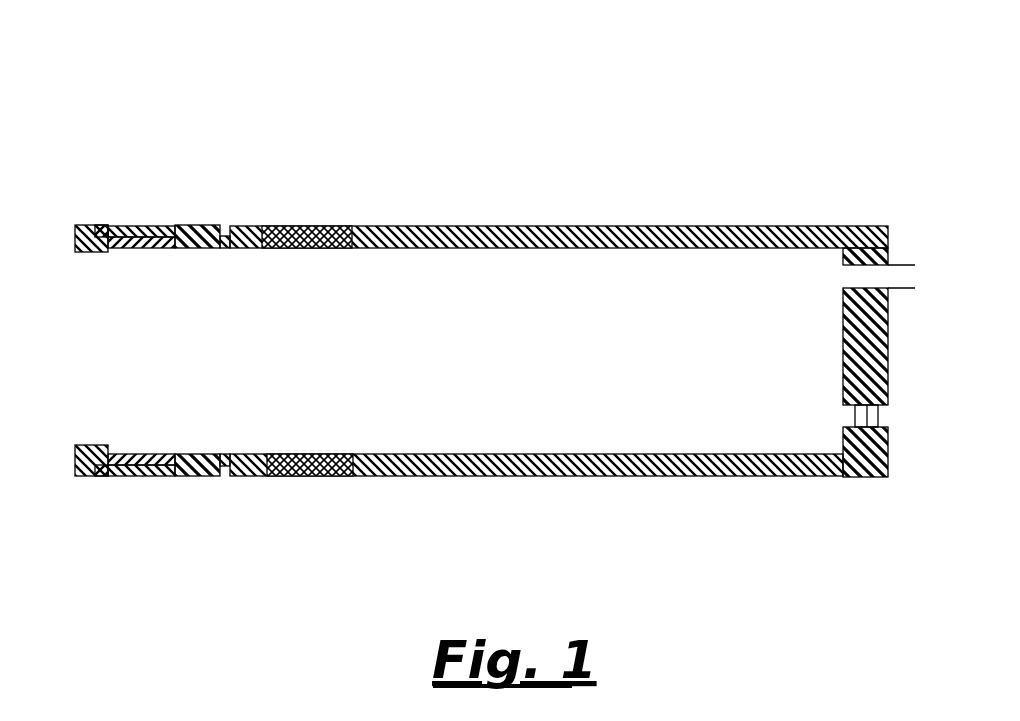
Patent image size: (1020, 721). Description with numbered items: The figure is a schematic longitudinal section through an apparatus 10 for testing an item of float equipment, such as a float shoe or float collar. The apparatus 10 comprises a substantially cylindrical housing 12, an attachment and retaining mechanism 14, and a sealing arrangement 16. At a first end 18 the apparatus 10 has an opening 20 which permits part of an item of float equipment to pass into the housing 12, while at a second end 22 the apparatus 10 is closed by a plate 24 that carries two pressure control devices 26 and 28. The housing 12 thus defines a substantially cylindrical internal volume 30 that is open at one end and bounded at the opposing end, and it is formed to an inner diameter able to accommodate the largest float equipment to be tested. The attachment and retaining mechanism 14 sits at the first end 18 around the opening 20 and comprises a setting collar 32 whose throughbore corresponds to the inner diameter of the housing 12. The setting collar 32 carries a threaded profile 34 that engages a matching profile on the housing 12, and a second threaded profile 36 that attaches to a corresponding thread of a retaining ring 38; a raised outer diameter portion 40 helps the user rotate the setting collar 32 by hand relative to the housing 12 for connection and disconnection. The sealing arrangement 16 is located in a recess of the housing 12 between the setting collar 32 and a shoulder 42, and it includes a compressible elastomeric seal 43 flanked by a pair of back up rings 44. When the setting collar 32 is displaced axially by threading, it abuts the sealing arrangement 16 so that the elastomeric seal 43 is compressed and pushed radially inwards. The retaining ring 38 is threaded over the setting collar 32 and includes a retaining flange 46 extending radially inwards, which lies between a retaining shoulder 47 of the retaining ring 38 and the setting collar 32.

The apparatus 10 is at (330, 137).
The housing 12 is at (532, 226).
The attachment and retaining mechanism 14 is at (191, 486).
The sealing arrangement 16 is at (332, 478).
The first end 18 is at (81, 478).
The opening 20 is at (90, 365).
The second end 22 is at (878, 226).
The plate 24 is at (890, 447).
The pressure control device 26 is at (896, 268).
The pressure control device 28 is at (885, 415).
The cavity 30 is at (475, 350).
The setting collar 32 is at (204, 226).
The threaded profile 34 is at (260, 226).
The second threaded profile 36 is at (128, 226).
The retaining ring 38 is at (87, 226).
The raised outer diameter portion 40 is at (190, 226).
The shoulder 42 is at (347, 226).
The compressible elastomeric seal 43 is at (320, 478).
The back up rings 44 is at (273, 478).
The retaining flange 46 is at (100, 478).
The retaining shoulder 47 is at (76, 250).